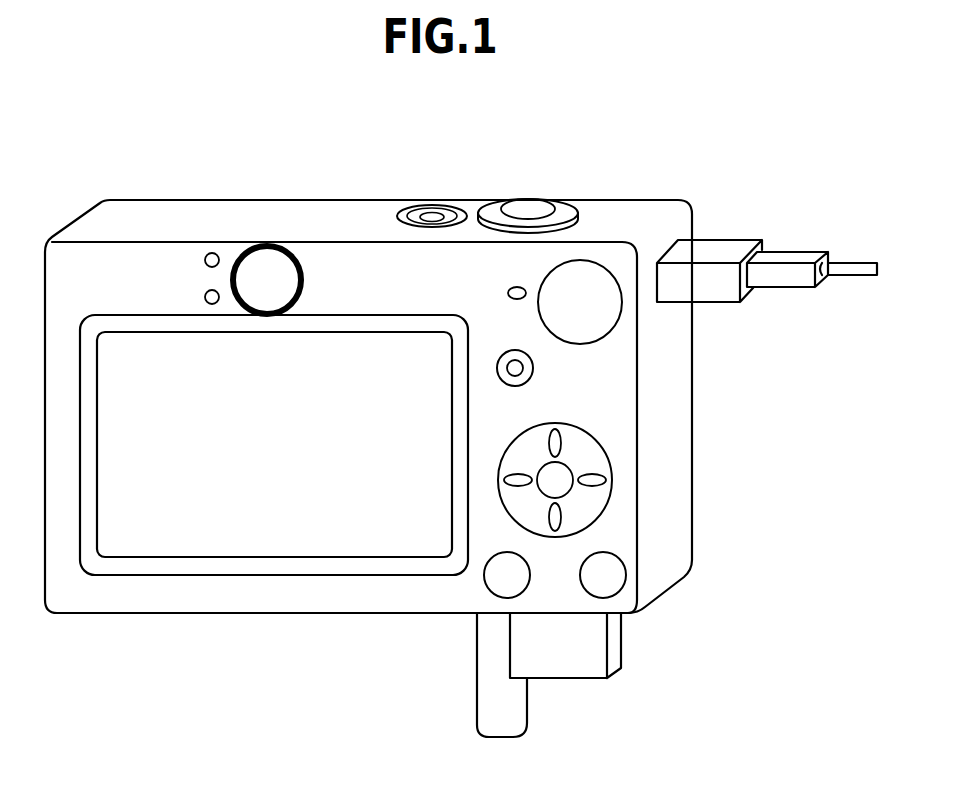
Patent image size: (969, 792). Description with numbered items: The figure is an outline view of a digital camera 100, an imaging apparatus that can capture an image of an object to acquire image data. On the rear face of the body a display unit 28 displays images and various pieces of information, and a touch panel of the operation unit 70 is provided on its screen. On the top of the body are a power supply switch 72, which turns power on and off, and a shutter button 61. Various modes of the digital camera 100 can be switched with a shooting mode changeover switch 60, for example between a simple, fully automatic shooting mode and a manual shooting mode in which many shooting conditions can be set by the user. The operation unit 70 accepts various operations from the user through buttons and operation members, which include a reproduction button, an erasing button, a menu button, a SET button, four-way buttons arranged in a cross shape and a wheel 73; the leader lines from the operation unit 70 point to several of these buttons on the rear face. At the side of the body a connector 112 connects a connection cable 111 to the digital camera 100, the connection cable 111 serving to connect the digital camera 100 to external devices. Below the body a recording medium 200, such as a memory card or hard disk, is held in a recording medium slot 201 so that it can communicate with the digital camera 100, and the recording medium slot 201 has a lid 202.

The digital camera 100 is at (124, 650).
The display unit 28 is at (162, 343).
The power supply switch 72 is at (432, 217).
The shutter button 61 is at (532, 210).
The shooting mode changeover switch 60 is at (597, 277).
The connector 112 is at (718, 243).
The connection cable 111 is at (793, 258).
The wheel 73 is at (518, 441).
The operation unit 70 is at (538, 233).
The recording medium 200 is at (595, 650).
The recording medium slot 201 is at (520, 614).
The lid 202 is at (527, 715).